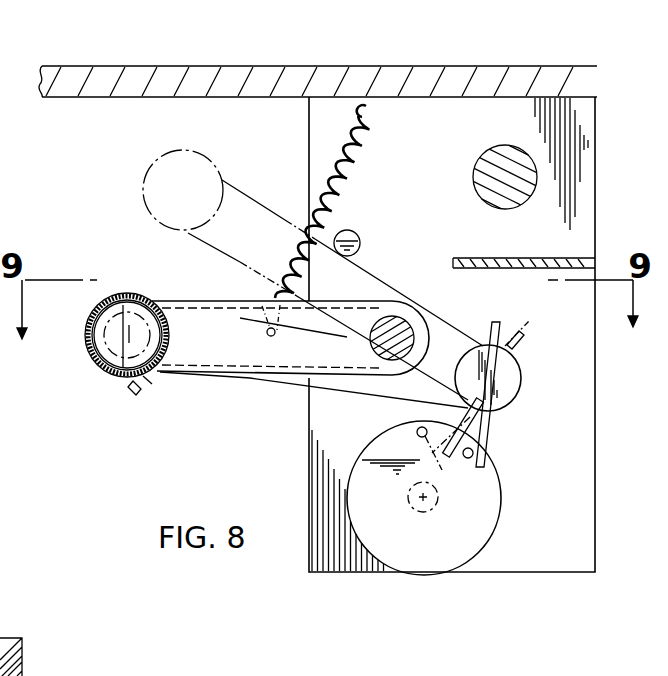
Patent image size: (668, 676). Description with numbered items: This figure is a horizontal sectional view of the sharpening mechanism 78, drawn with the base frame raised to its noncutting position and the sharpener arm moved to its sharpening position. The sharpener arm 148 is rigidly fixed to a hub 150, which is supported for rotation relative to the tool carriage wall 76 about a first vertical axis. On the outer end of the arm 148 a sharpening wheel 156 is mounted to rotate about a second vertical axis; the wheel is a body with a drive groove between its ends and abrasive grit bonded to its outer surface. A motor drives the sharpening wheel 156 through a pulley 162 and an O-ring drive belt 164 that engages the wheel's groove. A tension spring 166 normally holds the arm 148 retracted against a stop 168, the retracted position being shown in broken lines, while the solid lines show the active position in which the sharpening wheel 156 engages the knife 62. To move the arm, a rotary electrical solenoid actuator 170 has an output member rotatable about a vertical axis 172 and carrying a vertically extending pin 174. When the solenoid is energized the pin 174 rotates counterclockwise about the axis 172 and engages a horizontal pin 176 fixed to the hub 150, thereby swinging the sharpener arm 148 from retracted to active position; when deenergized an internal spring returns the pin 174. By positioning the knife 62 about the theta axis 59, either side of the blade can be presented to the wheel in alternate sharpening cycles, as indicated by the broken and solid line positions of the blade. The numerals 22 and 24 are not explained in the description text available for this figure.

The top wall 22 is at (104, 66).
The support post 24 is at (8, 638).
The theta axis 59 is at (146, 384).
The knife 62 is at (131, 389).
The tool carriage wall 76 is at (577, 460).
The sharpening mechanism 78 is at (461, 575).
The sharpener arm 148 is at (271, 212).
The hub 150 is at (523, 377).
The sharpening wheel 156 is at (134, 297).
The pulley 162 is at (390, 330).
The O-ring drive belt 164 is at (217, 301).
The tension spring 166 is at (373, 146).
The stop 168 is at (350, 233).
The rotary electrical solenoid actuator 170 is at (490, 500).
The vertical axis 172 is at (426, 499).
The vertically extending pin 174 is at (464, 457).
The horizontal pin 176 is at (497, 426).